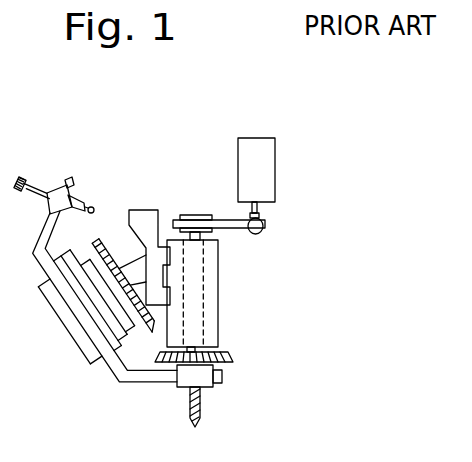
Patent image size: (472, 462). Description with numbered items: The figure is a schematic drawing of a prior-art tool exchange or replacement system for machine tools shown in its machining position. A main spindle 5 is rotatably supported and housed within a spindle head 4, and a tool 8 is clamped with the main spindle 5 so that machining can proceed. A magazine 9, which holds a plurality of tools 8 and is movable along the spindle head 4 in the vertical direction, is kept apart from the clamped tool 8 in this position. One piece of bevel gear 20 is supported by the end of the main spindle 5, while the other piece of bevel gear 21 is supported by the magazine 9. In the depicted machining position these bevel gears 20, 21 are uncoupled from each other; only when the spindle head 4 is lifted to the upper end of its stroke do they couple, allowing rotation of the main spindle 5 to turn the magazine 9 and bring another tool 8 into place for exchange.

The spindle head 4 is at (221, 293).
The main spindle 5 is at (199, 272).
The tool 8 is at (25, 174).
The magazine 9 is at (78, 268).
The bevel gear 20 is at (233, 356).
The bevel gear 21 is at (99, 239).